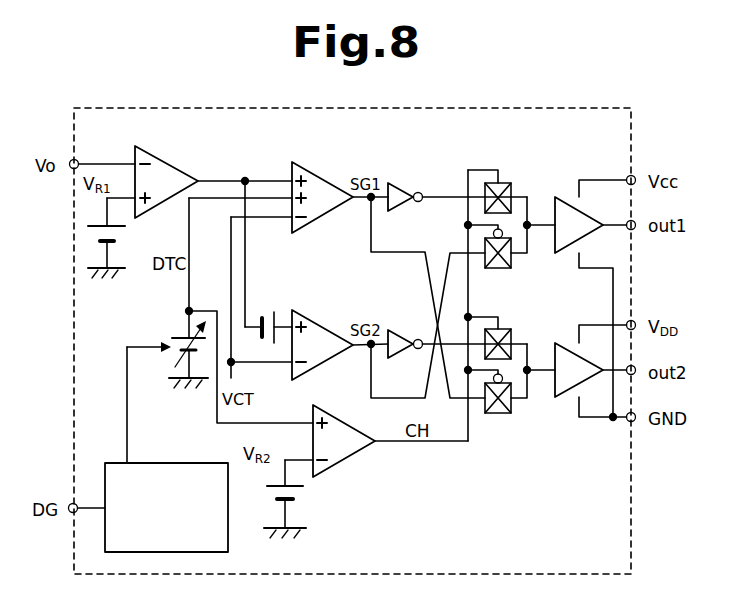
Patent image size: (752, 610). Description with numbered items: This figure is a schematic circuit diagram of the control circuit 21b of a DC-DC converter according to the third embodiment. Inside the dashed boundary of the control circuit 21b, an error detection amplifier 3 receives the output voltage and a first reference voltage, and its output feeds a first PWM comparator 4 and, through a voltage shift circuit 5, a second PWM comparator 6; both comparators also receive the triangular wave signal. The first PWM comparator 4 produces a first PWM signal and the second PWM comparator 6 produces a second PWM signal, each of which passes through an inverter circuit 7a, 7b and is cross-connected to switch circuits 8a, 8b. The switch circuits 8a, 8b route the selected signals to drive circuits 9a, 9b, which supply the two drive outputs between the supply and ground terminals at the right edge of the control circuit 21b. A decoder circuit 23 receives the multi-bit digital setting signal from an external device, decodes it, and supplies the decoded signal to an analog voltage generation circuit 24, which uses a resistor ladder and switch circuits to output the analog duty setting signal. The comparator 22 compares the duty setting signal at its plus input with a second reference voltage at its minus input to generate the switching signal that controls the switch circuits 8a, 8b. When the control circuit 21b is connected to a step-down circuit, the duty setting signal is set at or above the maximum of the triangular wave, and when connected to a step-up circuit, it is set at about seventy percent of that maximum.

The error detection amplifier 3 is at (166, 158).
The first PWM comparator 4 is at (322, 162).
The voltage shift circuit 5 is at (275, 312).
The second PWM comparator 6 is at (330, 312).
The inverter circuit 7a is at (400, 183).
The inverter circuit 7b is at (396, 330).
The switch circuit 8a is at (525, 171).
The switch circuit 8b is at (512, 440).
The drive circuit 9a is at (570, 250).
The drive circuit 9b is at (568, 398).
The control circuit 21b is at (590, 108).
The comparator 22 is at (340, 465).
The decoder circuit 23 is at (155, 457).
The analog voltage generation circuit 24 is at (178, 331).